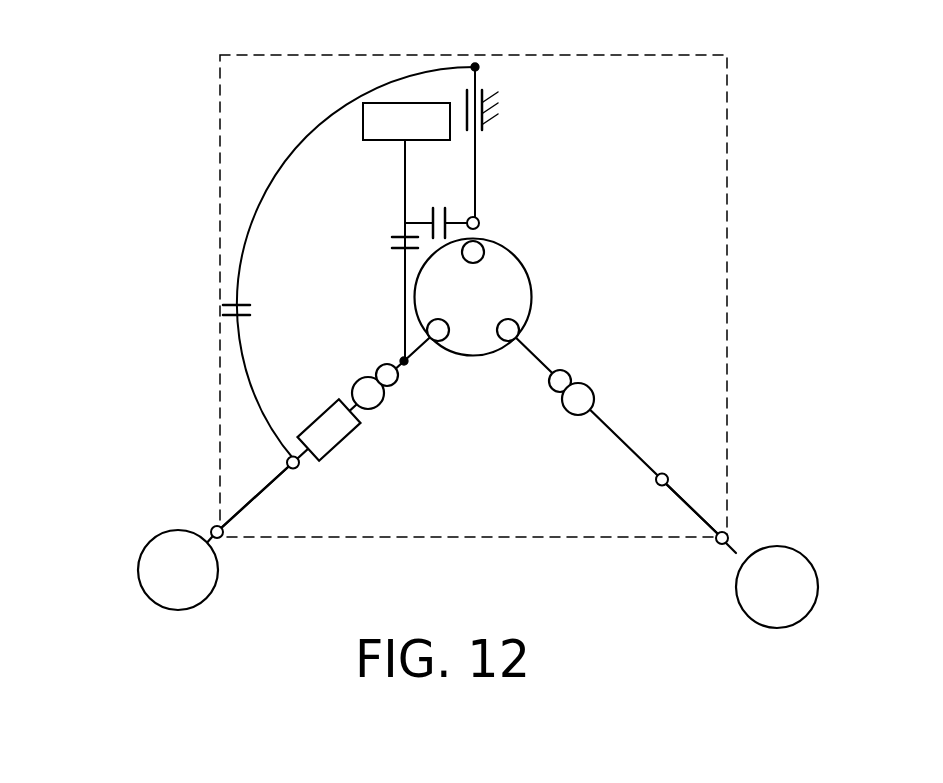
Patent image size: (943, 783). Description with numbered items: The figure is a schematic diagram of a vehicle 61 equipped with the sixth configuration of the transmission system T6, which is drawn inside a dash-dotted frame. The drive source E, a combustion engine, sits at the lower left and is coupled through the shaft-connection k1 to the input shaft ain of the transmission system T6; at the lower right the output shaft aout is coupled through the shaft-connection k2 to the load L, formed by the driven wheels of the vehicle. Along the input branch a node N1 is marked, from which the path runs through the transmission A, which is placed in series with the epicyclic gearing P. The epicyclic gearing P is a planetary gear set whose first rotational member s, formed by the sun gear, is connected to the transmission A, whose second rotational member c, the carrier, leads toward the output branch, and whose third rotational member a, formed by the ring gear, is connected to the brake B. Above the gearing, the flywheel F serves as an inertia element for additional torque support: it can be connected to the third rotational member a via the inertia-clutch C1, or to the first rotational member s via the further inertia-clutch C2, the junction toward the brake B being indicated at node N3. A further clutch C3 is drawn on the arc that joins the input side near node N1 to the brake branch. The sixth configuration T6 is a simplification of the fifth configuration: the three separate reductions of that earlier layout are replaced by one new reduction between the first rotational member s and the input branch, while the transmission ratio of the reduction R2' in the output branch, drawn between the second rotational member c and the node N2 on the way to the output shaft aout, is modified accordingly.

The vehicle 61 is at (108, 140).
The transmission system T6 is at (214, 208).
The brake B is at (505, 100).
The flywheel F is at (406, 232).
The inertia-clutch C1 is at (437, 209).
The further inertia-clutch C2 is at (386, 245).
The capacitor C3 is at (349, 264).
The node N3 is at (479, 223).
The third rotational member a is at (470, 252).
The epicyclic gearing P is at (473, 297).
The first rotational member s is at (427, 330).
The second rotational member c is at (519, 330).
The reduction R2' is at (550, 416).
The transmission A is at (329, 429).
The node N1 is at (297, 467).
The shaft-connection k1 is at (213, 528).
The drive source E is at (178, 570).
The input shaft ain is at (250, 505).
The node N2 is at (657, 484).
The shaft-connection k2 is at (729, 528).
The load L is at (772, 585).
The output shaft aout is at (710, 527).